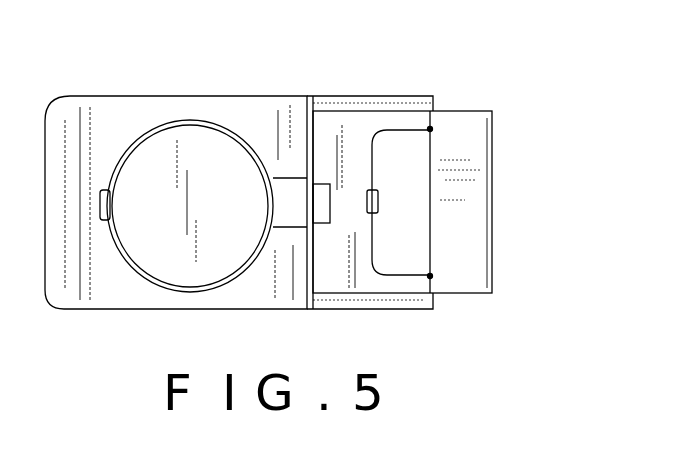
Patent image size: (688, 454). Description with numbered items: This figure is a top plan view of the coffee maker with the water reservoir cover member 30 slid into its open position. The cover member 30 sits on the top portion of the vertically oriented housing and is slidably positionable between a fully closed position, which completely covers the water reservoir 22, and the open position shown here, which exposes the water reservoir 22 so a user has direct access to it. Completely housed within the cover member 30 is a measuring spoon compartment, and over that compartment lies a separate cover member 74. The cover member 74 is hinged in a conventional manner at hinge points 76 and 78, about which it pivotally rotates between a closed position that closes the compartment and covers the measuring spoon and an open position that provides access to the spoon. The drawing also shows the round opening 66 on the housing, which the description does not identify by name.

The water reservoir 22 is at (337, 127).
The cover member 30 is at (465, 233).
The lens window 66 is at (157, 160).
The cover member 74 is at (490, 170).
The hinge point 76 is at (428, 126).
The hinge point 78 is at (429, 279).